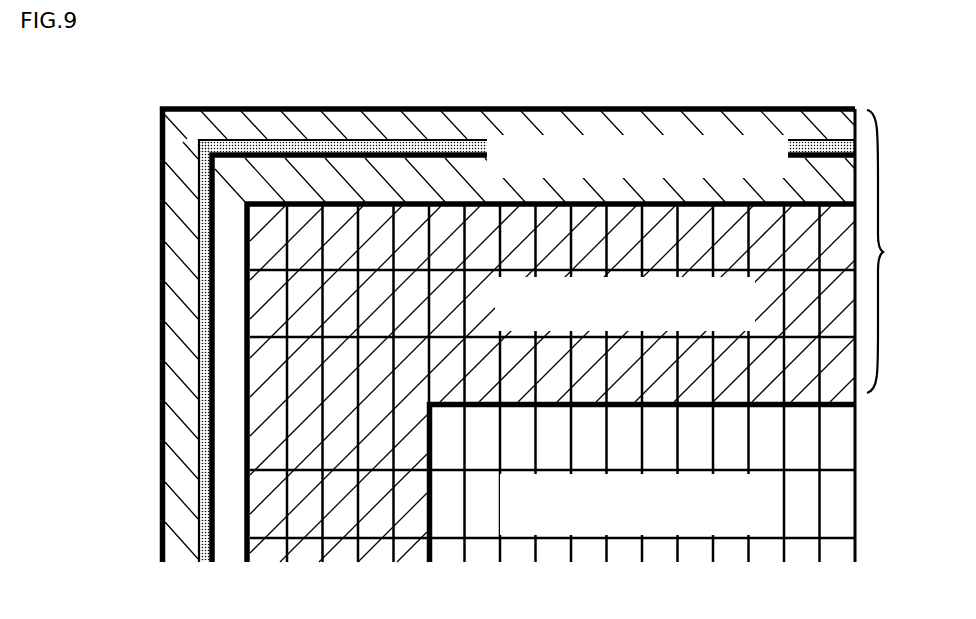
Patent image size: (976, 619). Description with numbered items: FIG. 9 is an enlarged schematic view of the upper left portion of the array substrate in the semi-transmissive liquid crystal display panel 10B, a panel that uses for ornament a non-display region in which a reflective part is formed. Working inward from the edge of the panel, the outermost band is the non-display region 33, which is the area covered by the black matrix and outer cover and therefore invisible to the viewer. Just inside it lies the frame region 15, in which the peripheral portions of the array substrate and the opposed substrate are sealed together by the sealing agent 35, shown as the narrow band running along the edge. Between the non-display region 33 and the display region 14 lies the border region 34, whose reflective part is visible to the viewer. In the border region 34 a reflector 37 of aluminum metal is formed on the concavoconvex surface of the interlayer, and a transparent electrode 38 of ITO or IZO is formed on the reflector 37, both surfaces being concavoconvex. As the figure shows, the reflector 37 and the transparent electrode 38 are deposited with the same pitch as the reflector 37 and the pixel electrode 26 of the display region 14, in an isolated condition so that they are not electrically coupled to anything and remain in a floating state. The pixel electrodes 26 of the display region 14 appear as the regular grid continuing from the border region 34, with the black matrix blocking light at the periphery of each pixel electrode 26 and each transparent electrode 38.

The semi-transmissive liquid crystal display panel 10B is at (128, 126).
The display region 14 is at (552, 484).
The frame region 15 is at (899, 251).
The pixel electrode 26 is at (832, 507).
The non-display region 33 is at (510, 335).
The border region 34 is at (551, 383).
The sealing agent 35 is at (207, 272).
The reflector 37 is at (295, 377).
The transparent electrode 38 is at (446, 384).